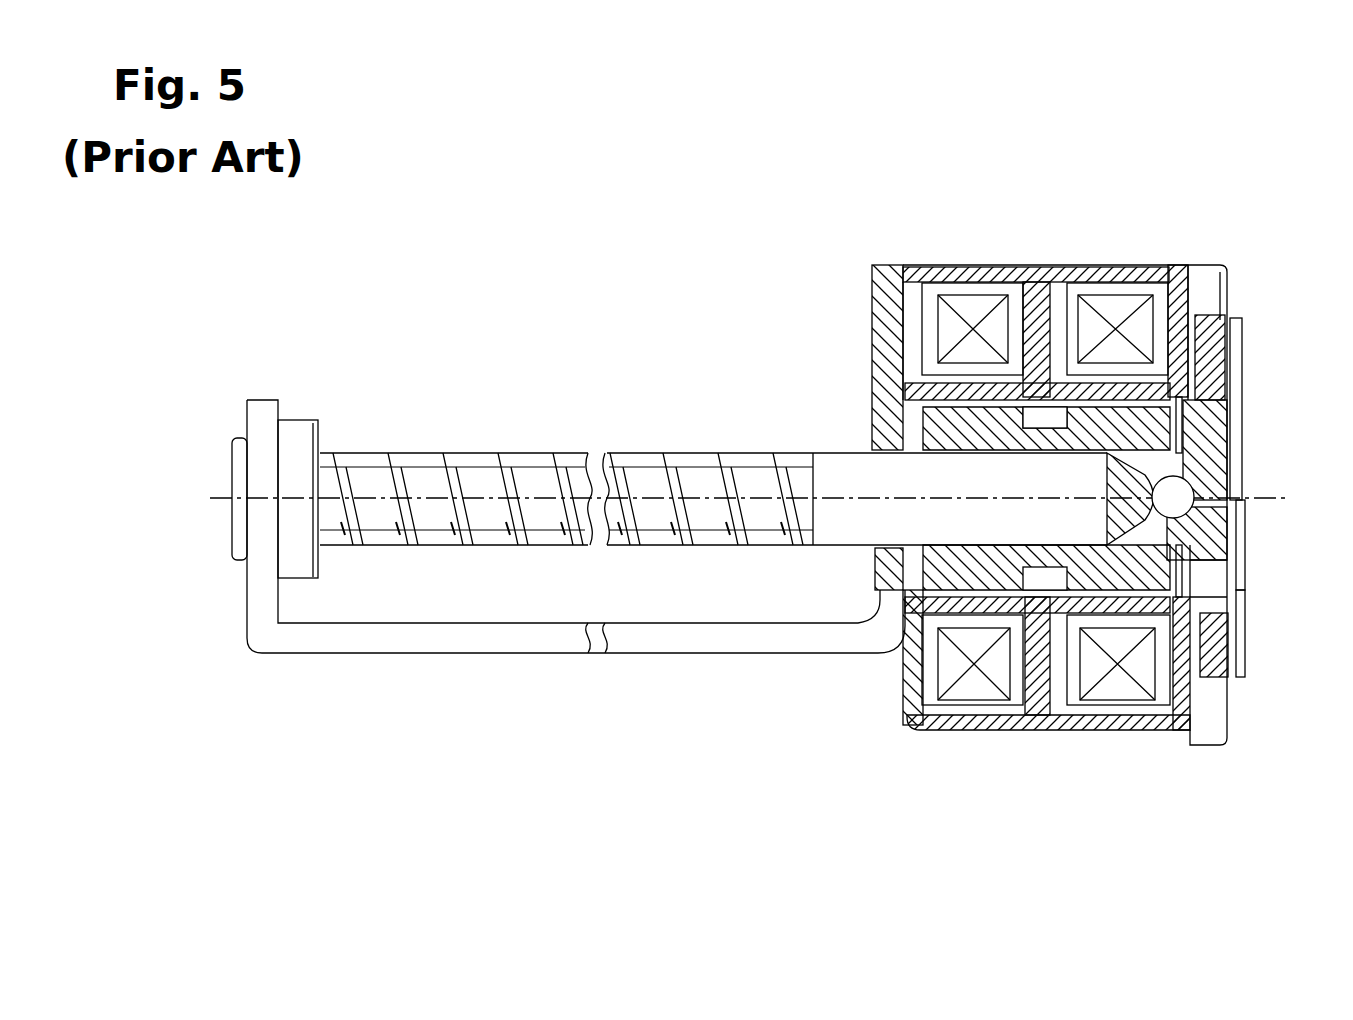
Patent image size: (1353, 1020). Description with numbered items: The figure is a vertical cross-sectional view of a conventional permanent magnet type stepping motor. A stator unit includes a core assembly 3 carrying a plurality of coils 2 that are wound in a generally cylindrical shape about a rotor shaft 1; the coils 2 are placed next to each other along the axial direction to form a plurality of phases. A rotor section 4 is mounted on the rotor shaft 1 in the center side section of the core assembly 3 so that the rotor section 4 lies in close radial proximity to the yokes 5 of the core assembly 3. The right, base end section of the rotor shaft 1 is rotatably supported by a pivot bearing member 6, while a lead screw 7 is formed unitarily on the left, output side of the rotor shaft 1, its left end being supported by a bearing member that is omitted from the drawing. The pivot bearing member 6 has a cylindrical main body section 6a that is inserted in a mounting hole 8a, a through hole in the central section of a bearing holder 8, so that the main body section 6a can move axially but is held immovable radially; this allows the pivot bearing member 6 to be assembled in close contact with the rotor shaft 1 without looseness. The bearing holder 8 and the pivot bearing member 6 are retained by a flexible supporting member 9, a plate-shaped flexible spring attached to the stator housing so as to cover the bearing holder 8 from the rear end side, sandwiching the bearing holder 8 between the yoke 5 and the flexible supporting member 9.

The rotor shaft 1 is at (870, 470).
The coils 2 is at (972, 300).
The core assembly 3 is at (1053, 258).
The rotor section 4 is at (920, 567).
The yokes 5 is at (1195, 406).
The pivot bearing member 6 is at (1243, 453).
The main body section 6a is at (1205, 500).
The lead screw 7 is at (536, 455).
The bearing holder 8 is at (1213, 582).
The mounting hole 8a is at (1247, 545).
The flexible supporting member 9 is at (1243, 612).